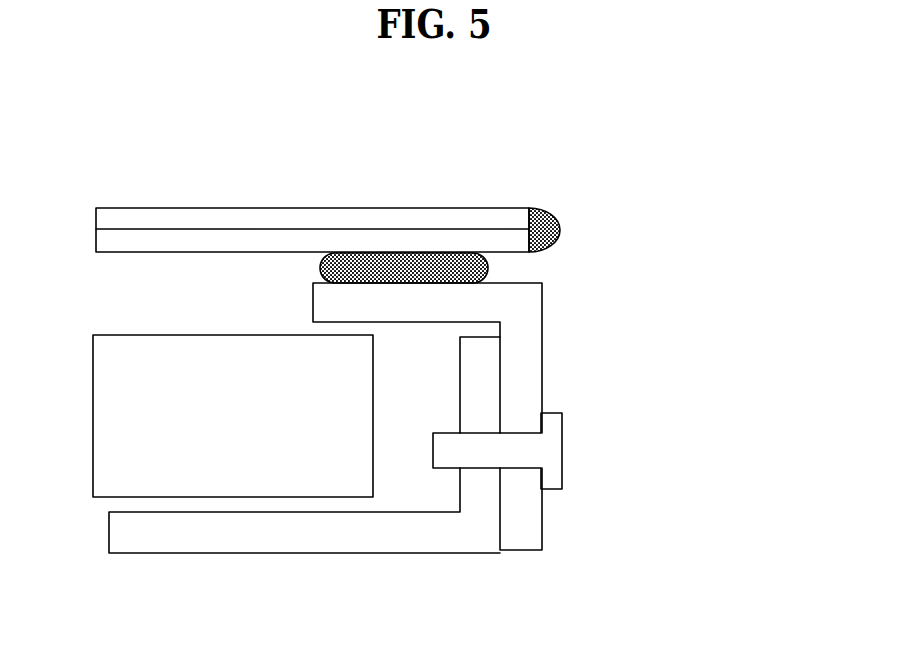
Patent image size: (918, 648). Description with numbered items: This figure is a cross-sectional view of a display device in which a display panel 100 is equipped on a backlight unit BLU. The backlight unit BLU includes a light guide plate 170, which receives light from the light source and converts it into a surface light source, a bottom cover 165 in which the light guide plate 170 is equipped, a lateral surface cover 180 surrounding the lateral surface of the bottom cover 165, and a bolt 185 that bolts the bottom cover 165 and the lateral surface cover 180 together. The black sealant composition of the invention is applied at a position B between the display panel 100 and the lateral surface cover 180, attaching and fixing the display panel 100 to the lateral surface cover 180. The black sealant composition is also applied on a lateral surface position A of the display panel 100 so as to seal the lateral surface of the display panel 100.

The display panel 100 is at (186, 186).
The lateral surface position A is at (552, 213).
The position between display panel and lateral surface cover B is at (489, 265).
The bottom cover 165 is at (453, 540).
The light guide plate 170 is at (243, 474).
The lateral surface cover 180 is at (528, 348).
The bolt 185 is at (551, 451).
The backlight unit BLU is at (692, 349).